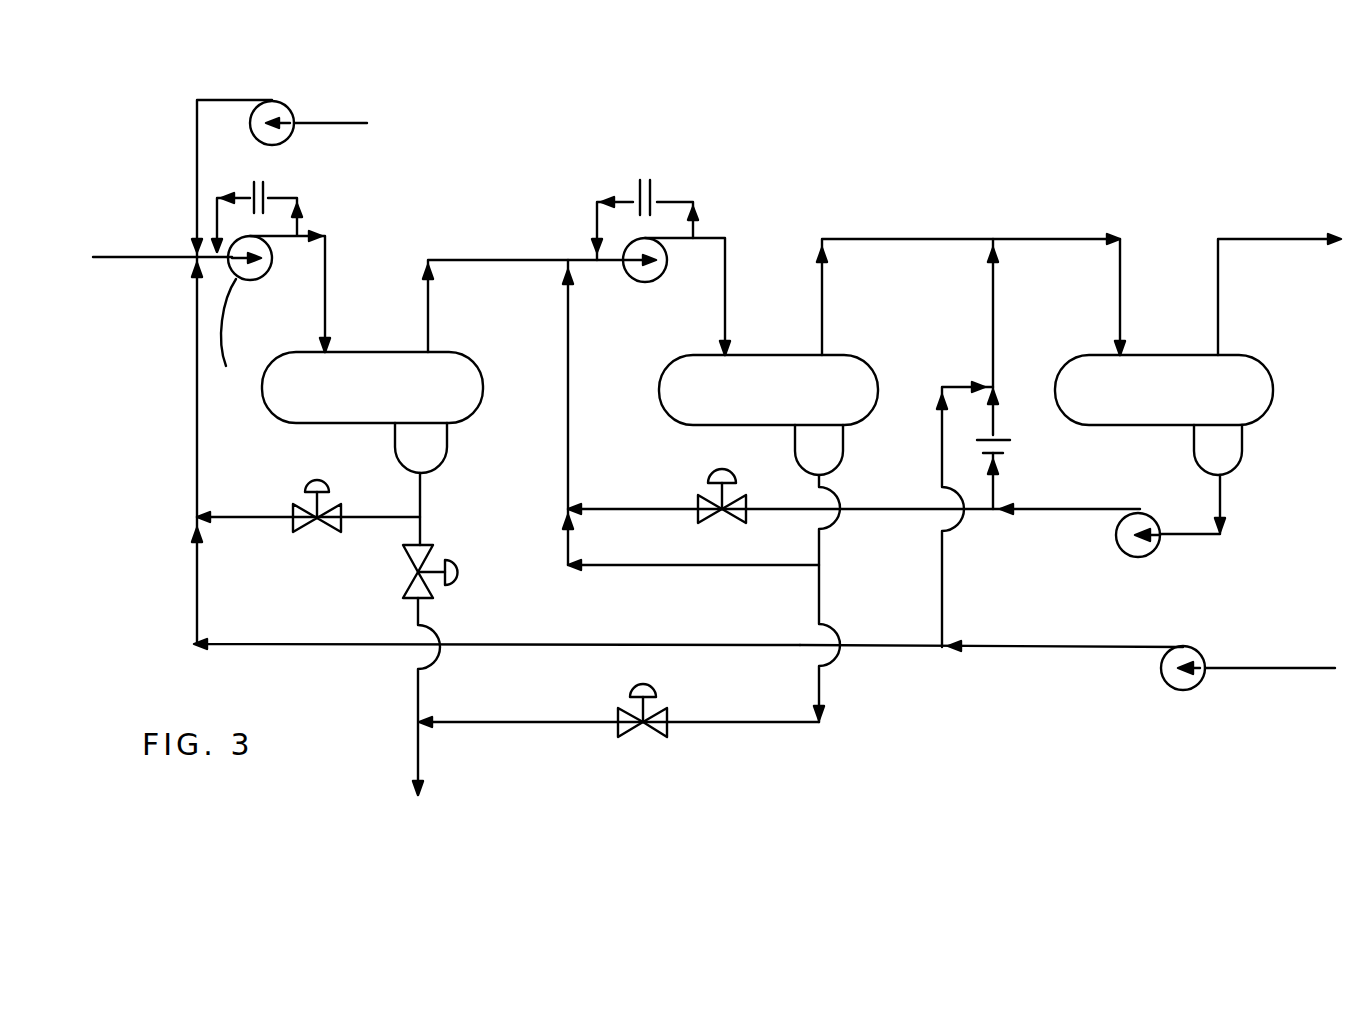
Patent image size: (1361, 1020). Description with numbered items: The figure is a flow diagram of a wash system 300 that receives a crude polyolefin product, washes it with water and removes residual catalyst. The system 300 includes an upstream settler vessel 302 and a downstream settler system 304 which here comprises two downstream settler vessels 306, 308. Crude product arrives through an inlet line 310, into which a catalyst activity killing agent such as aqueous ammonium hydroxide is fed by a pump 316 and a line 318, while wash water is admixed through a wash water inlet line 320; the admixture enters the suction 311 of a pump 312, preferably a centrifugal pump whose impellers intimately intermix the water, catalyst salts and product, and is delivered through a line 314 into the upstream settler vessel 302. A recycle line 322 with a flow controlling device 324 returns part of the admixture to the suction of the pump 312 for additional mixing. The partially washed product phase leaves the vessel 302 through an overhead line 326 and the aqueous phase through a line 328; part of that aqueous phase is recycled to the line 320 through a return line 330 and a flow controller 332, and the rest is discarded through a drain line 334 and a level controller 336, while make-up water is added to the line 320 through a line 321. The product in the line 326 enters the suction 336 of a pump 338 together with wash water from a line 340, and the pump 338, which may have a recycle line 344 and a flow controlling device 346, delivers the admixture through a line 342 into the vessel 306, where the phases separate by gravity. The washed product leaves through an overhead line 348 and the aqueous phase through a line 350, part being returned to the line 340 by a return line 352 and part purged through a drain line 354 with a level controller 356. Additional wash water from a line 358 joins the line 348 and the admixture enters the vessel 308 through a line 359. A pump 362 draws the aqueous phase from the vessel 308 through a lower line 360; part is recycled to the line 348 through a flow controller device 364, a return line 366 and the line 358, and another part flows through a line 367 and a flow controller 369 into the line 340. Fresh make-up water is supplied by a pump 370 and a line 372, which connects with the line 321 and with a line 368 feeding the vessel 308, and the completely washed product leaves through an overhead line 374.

The wash system 300 is at (705, 136).
The upstream settler vessel 302 is at (399, 312).
The downstream settler system 304 is at (977, 203).
The downstream settler vessel 306 is at (790, 355).
The downstream settler vessel 308 is at (1200, 328).
The inlet line 310 is at (140, 256).
The suction 311 is at (238, 336).
The pump 312 is at (252, 280).
The line 314 is at (377, 205).
The pump 316 is at (290, 107).
The line 318 is at (197, 163).
The wash water inlet line 320 is at (197, 440).
The make-up wash water line 321 is at (312, 642).
The recycle line 322 is at (293, 196).
The flow controlling device 324 is at (271, 196).
The overhead line 326 is at (489, 252).
The line 328 is at (421, 492).
The return line 330 is at (398, 479).
The flow controller 332 is at (317, 484).
The drain line 334 is at (420, 608).
The level controller 336 is at (459, 572).
The pump 338 is at (655, 270).
The line 340 is at (568, 390).
The line 342 is at (725, 279).
The recycle line 344 is at (698, 215).
The flow controlling device 346 is at (642, 196).
The overhead line 348 is at (822, 296).
The line 350 is at (821, 545).
The return line 352 is at (657, 567).
The drain line 354 is at (552, 727).
The level controller 356 is at (645, 695).
The line 358 is at (993, 310).
The line 359 is at (1120, 262).
The lower line 360 is at (1222, 498).
The pump 362 is at (1153, 548).
The flow controller device 364 is at (1010, 455).
The return line 366 is at (993, 488).
The line 367 is at (777, 512).
The line 368 is at (942, 597).
The flow controller 369 is at (715, 478).
The pump 370 is at (1200, 680).
The line 372 is at (1040, 648).
The overhead line 374 is at (1270, 239).